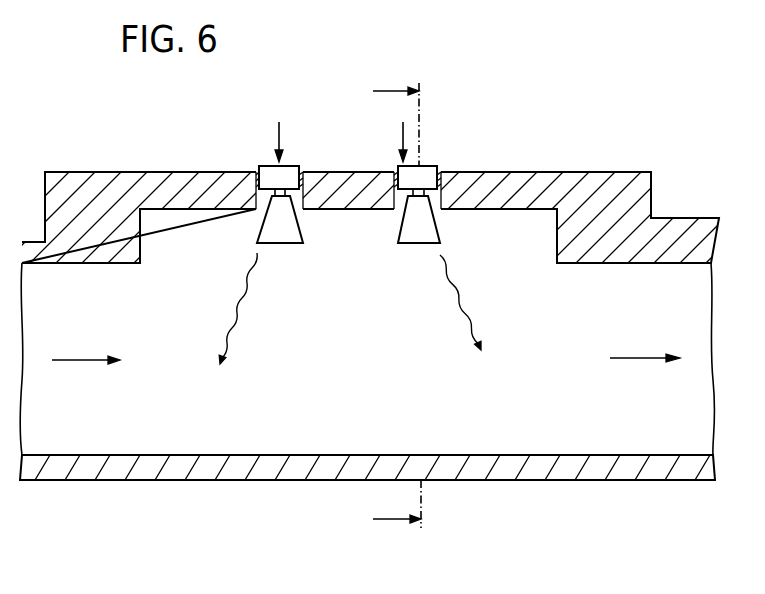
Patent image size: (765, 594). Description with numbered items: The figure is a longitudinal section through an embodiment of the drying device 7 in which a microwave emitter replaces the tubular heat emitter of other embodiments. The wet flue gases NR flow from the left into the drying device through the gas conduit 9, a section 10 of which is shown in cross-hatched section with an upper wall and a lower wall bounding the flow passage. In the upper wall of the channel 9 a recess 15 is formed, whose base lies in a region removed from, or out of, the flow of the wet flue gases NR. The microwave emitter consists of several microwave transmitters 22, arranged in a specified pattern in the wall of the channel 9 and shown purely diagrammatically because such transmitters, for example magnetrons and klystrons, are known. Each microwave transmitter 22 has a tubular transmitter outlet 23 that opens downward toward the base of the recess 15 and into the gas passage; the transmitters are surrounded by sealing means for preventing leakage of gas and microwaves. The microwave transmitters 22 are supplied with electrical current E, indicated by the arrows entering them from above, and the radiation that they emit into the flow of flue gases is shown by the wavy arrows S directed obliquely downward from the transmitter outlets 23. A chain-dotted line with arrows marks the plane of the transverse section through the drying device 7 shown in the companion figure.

The gas conduit 9 is at (700, 218).
The section of the gas conduit 10 is at (608, 468).
The recess 15 is at (512, 258).
The microwave transmitter 22 is at (425, 172).
The tubular transmitter outlet 23 is at (289, 240).
The drying device 7 is at (401, 304).
The electrical current E is at (331, 137).
The radiation S is at (349, 309).
The wet flue gases NR is at (72, 360).